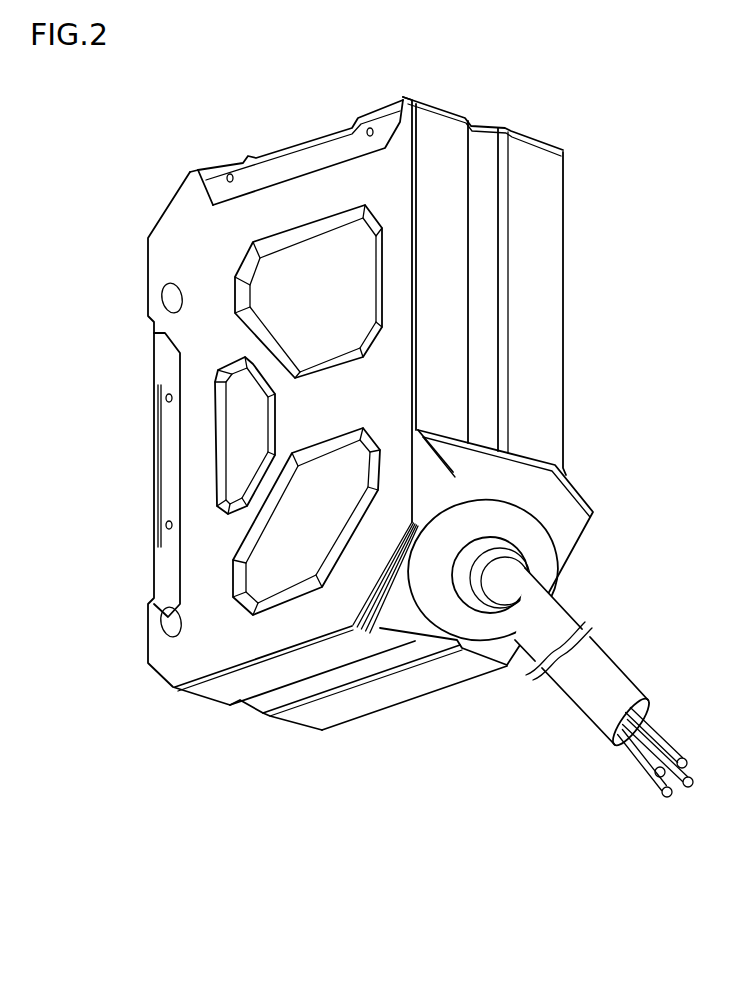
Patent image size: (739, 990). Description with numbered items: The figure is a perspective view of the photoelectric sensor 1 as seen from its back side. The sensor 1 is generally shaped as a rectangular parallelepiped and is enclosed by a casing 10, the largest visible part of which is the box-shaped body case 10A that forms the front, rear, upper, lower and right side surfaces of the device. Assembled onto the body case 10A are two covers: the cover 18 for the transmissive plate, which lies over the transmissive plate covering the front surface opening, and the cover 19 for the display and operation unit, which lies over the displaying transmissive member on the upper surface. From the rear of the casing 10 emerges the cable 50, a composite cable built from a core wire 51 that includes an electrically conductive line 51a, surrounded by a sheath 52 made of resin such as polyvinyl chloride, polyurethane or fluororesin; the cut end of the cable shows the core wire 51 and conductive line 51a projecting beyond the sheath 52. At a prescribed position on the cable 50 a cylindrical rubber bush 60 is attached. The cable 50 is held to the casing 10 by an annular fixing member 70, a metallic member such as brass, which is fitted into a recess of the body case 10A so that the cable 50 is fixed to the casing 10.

The photoelectric sensor 1 is at (638, 98).
The casing 10 is at (173, 165).
The body case 10A is at (205, 574).
The cover for the transmissive plate 18 is at (168, 453).
The cover for the display and operation unit 19 is at (302, 165).
The cable 50 is at (452, 747).
The core wire 51 is at (642, 752).
The electrically conductive line 51a is at (663, 797).
The sheath 52 is at (587, 682).
The bush 60 is at (482, 550).
The fixing member 70 is at (540, 551).